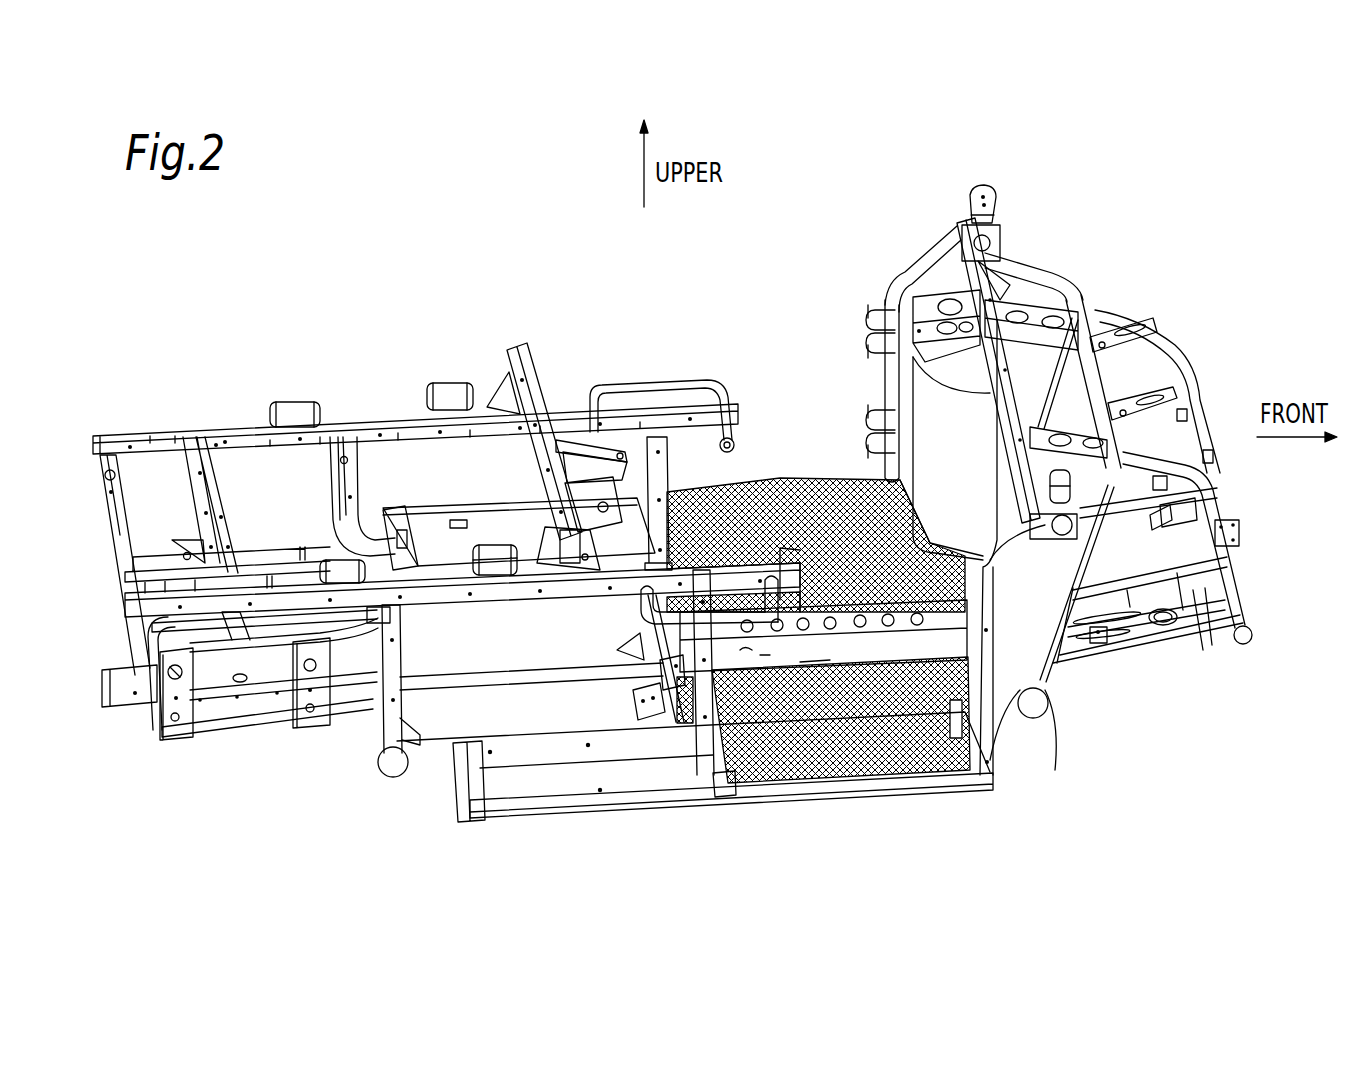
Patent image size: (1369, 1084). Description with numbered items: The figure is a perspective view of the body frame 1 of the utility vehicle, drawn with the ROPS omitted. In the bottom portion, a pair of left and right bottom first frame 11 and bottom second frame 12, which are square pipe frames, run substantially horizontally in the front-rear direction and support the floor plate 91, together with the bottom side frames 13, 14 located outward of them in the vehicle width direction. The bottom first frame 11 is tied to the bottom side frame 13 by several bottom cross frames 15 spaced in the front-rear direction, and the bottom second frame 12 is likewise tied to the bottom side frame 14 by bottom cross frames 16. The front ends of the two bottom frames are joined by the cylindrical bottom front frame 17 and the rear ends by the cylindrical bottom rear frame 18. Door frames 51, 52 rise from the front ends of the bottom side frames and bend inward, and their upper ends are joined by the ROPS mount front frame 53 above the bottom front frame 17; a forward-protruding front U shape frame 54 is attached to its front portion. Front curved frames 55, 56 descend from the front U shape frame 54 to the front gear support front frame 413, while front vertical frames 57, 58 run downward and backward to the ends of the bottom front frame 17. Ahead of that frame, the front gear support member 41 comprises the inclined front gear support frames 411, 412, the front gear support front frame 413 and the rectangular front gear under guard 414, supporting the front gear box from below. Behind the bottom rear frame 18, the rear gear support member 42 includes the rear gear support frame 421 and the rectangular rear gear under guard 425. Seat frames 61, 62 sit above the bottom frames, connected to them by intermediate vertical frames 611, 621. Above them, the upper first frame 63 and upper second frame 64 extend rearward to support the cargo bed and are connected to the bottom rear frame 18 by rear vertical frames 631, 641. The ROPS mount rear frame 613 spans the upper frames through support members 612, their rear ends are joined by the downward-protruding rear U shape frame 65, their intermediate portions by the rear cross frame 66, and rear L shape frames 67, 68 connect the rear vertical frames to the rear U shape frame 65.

The body frame 1 is at (1129, 226).
The bottom first frame 11 is at (550, 750).
The bottom second frame 12 is at (620, 455).
The bottom side frame 13 is at (660, 805).
The bottom side frame 14 is at (430, 520).
The bottom cross frames 15 is at (477, 792).
The bottom cross frames 16 is at (400, 522).
The bottom front frame 17 is at (1040, 742).
The bottom rear frame 18 is at (400, 778).
The front gear support member 41 is at (1210, 668).
The front gear support frame 411 is at (1170, 640).
The front gear support frame 412 is at (1107, 603).
The front gear support front frame 413 is at (1247, 645).
The front gear under guard 414 is at (1137, 623).
The rear gear support member 42 is at (207, 748).
The rear gear support frame 421 is at (253, 713).
The rear gear under guard 425 is at (267, 683).
The door frame 51 is at (987, 727).
The door frame 52 is at (893, 290).
The ROPS mount front frame 53 is at (973, 280).
The front U shape frame 54 is at (1057, 290).
The front curved frame 55 is at (1220, 483).
The front curved frame 56 is at (1173, 355).
The front vertical frame 57 is at (1070, 607).
The front vertical frame 58 is at (1063, 350).
The seat frame 61 is at (745, 560).
The intermediate vertical frame 611 is at (713, 677).
The support members 612 is at (497, 393).
The ROPS mount rear frame 613 is at (522, 372).
The seat frame 62 is at (657, 463).
The intermediate vertical frame 621 is at (700, 453).
The upper first frame 63 is at (457, 603).
The rear vertical frame 631 is at (387, 707).
The upper second frame 64 is at (358, 428).
The rear vertical frame 641 is at (338, 520).
The rear U shape frame 65 is at (110, 527).
The rear cross frame 66 is at (197, 455).
The rear L shape frame 67 is at (257, 633).
The rear L shape frame 68 is at (266, 565).
The floor plate 91 is at (810, 785).